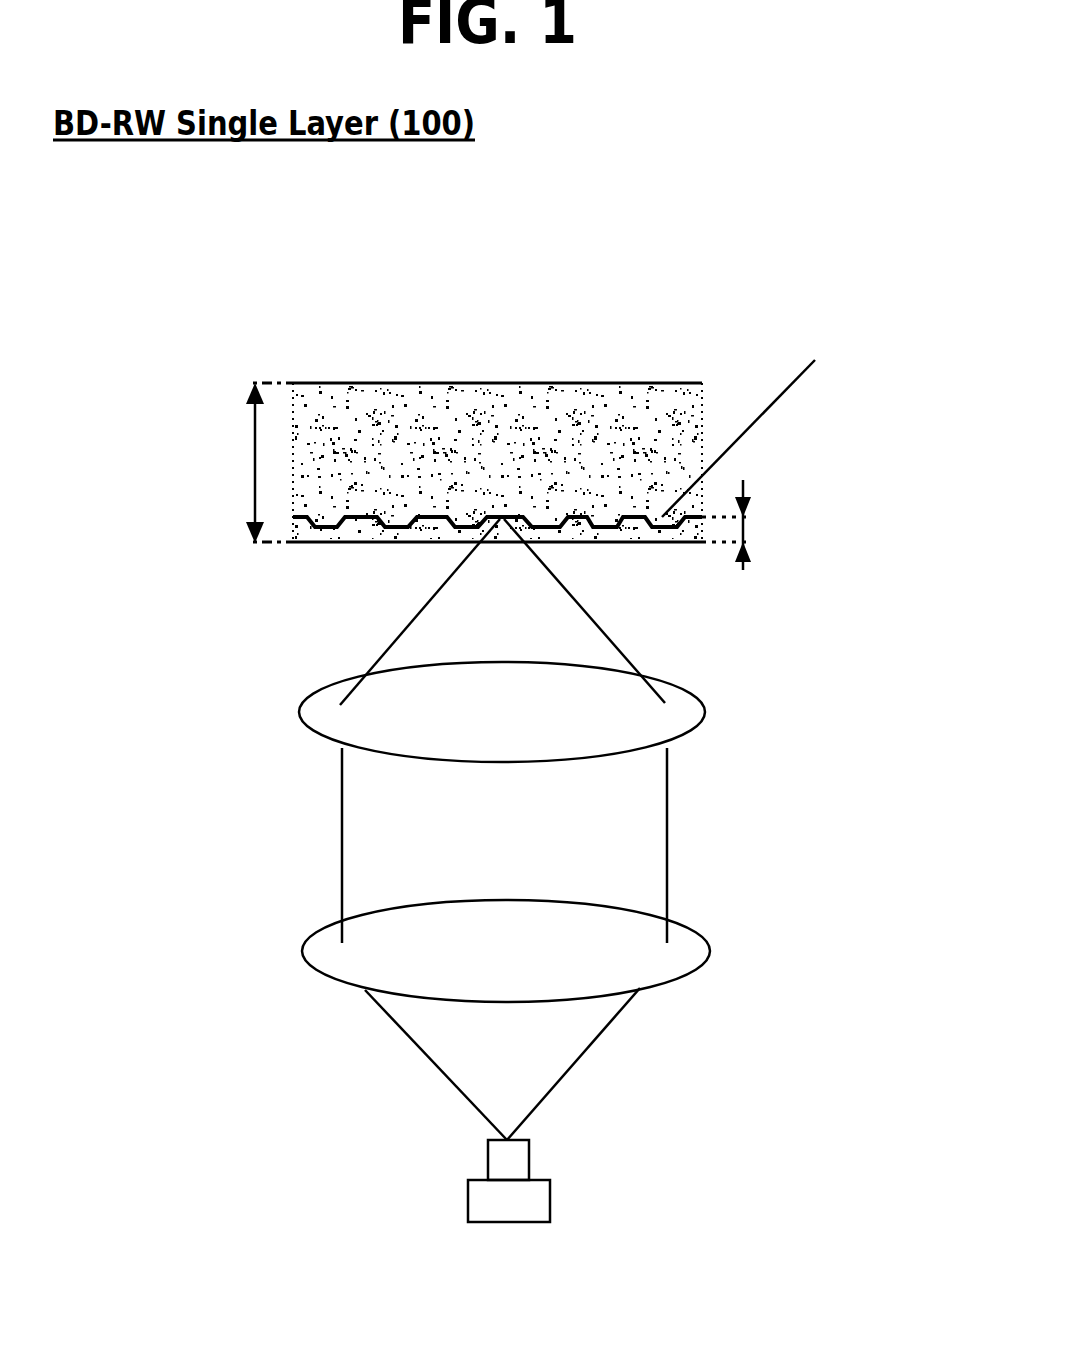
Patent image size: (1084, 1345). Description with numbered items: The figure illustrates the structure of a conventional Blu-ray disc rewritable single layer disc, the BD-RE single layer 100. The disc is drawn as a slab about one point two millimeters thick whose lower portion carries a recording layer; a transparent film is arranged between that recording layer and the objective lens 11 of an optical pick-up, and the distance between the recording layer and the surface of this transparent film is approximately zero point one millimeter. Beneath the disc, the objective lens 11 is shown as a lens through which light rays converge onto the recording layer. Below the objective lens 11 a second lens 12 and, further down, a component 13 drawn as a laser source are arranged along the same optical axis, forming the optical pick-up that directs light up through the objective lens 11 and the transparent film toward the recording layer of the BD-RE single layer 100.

The BD-RE single layer 100 is at (400, 410).
The objective lens 11 is at (322, 703).
The collimator lens (CL) 12 is at (323, 943).
The laser diode (LD) 13 is at (532, 1202).